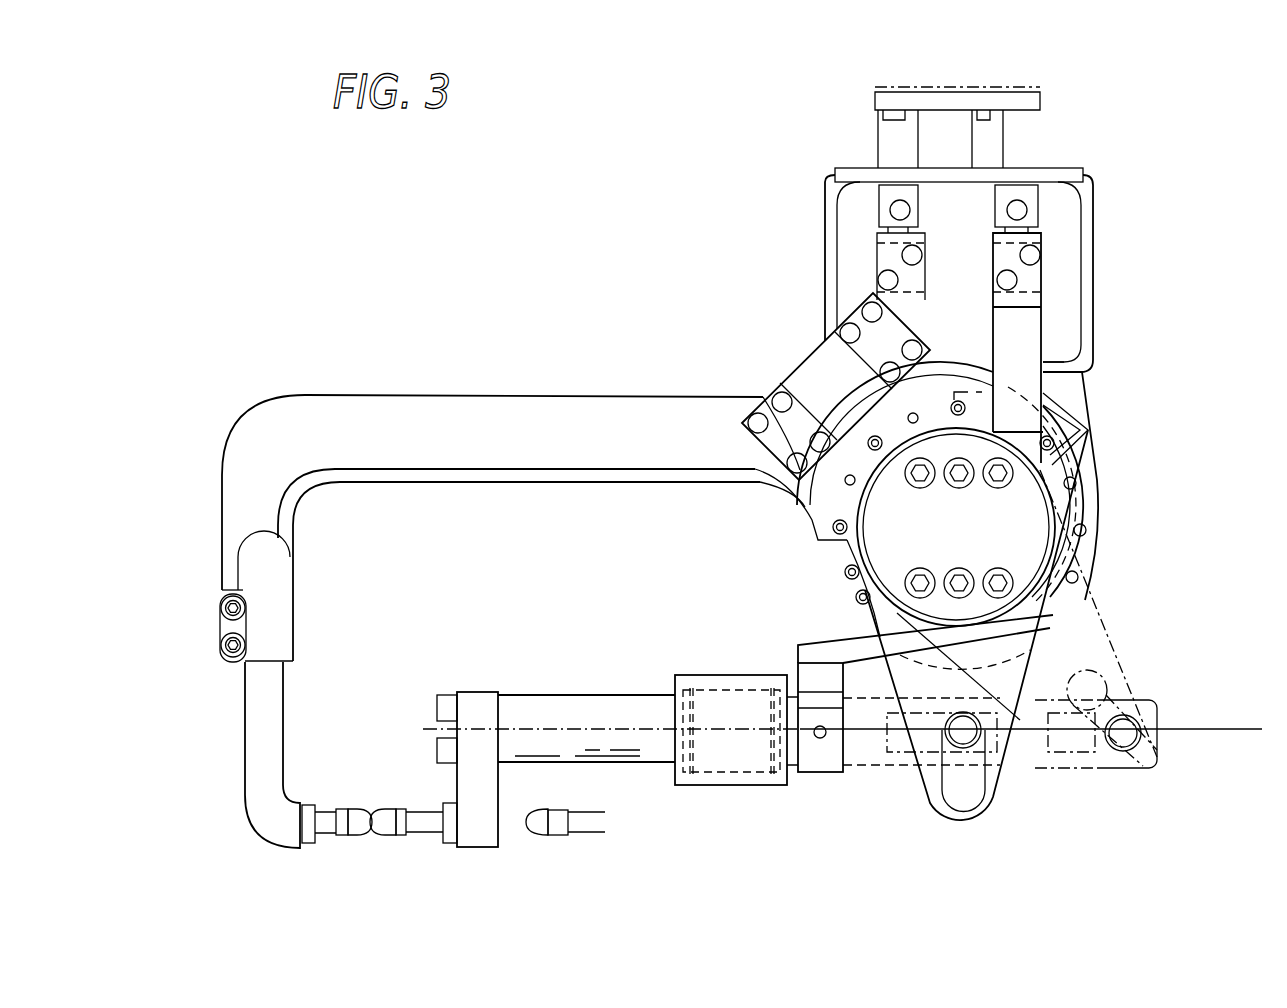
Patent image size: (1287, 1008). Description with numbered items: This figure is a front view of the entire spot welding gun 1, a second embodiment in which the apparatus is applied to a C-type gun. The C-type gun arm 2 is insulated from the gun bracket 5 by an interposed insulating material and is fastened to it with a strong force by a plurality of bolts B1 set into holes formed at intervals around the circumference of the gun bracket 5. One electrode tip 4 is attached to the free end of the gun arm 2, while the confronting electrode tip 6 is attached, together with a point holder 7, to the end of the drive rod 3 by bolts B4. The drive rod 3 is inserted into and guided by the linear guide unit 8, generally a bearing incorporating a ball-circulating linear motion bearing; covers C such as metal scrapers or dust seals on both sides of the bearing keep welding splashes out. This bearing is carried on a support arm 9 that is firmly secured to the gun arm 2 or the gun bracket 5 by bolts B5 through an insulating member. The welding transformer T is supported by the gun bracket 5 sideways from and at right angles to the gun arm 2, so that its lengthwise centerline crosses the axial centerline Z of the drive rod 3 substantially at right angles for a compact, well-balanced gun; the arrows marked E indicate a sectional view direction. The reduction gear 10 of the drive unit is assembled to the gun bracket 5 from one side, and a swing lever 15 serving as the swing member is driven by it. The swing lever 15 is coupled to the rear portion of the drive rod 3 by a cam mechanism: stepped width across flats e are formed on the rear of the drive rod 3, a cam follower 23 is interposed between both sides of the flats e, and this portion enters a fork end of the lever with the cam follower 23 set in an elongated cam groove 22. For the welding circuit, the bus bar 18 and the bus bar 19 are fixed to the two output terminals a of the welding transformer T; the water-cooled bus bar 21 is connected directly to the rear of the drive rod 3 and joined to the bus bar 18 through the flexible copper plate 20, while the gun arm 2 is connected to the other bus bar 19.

The spot welding gun 1 is at (569, 330).
The C-type gun arm 2 is at (452, 410).
The drive rod 3 is at (557, 700).
The electrode tip 4 is at (348, 828).
The gun bracket 5 is at (935, 100).
The electrode tip 6 is at (383, 826).
The point holder 7 is at (478, 838).
The linear guide unit 8 is at (712, 785).
The support arm 9 is at (742, 655).
The reduction gear 10 is at (1033, 520).
The swing lever 15 is at (1113, 657).
The bus bar 18 is at (1035, 328).
The bus bar 19 is at (818, 365).
The flexible copper plate 20 is at (818, 645).
The water-cooled bus bar 21 is at (823, 762).
The elongated cam groove 22 is at (965, 740).
The cam follower 23 is at (978, 793).
The bolts B1 is at (827, 523).
The bolts B4 is at (447, 690).
The bolts B5 is at (858, 595).
The welding transformer T is at (1060, 235).
The output terminals a is at (877, 243).
The width across flats e is at (900, 742).
The covers C is at (678, 750).
The section E is at (1130, 100).
The axial centerline Z is at (1244, 733).